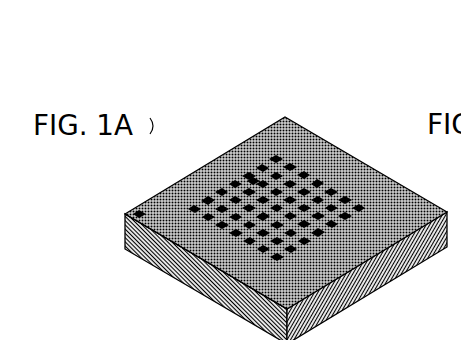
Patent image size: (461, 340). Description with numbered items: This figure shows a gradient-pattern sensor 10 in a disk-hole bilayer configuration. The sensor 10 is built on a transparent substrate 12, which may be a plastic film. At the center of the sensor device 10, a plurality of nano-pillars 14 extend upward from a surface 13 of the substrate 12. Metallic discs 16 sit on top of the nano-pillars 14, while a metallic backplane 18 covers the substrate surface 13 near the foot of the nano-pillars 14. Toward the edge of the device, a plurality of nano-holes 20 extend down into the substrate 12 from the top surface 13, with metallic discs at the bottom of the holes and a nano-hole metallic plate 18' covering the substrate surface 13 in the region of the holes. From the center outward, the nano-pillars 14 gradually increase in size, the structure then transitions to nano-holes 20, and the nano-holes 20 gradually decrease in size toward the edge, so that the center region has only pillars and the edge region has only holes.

The gradient-pattern sensor 10 is at (247, 171).
The transparent substrate 12 is at (366, 288).
The substrate surface 13 is at (100, 220).
The nano-pillars 14 is at (222, 195).
The metallic discs 16 is at (326, 166).
The metallic backplane 18 is at (207, 127).
The nano-hole metallic plate 18' is at (96, 193).
The nano-holes 20 is at (173, 252).